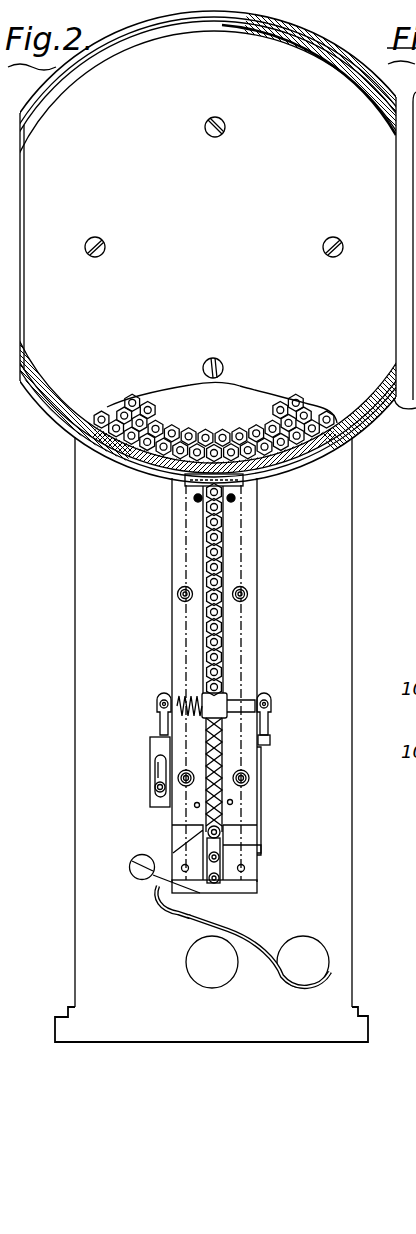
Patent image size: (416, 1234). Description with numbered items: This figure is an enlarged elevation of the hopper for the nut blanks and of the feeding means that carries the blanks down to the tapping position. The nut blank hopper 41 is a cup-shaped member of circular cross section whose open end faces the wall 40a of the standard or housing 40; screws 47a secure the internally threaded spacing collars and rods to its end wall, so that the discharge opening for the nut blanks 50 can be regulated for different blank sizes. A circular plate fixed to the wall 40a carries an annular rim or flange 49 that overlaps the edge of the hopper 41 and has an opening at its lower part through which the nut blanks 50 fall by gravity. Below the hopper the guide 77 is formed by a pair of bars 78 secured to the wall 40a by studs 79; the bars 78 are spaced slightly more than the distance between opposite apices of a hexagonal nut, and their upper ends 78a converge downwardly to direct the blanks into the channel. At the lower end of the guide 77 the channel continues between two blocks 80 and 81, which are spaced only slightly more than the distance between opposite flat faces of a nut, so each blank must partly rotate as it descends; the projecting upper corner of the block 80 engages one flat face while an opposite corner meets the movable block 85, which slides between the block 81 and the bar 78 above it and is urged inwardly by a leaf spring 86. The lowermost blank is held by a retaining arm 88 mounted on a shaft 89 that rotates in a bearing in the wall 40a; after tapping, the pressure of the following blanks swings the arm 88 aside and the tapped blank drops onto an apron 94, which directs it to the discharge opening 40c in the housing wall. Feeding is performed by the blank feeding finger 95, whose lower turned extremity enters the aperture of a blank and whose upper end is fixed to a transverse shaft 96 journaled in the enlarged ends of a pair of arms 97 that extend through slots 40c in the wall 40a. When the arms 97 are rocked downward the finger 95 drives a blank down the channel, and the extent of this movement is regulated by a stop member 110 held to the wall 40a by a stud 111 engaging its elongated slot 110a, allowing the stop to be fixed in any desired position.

The standard or housing 40 is at (378, 623).
The wall of the housing 40a is at (58, 1010).
The discharge opening and slots 40c is at (318, 965).
The nut blank hopper 41 is at (97, 321).
The screws 47a is at (222, 360).
The annular rim or flange 49 is at (412, 444).
The nut blanks 50 is at (245, 430).
The guide 77 is at (262, 564).
The bars 78 is at (178, 632).
The upper ends of the bars 78a is at (180, 483).
The studs 79 is at (248, 595).
The bar or block 80 is at (173, 852).
The bar or block 81 is at (247, 860).
The movable block 85 is at (243, 837).
The leaf spring 86 is at (260, 800).
The retaining arm 88 is at (173, 914).
The shaft 89 is at (130, 873).
The apron 94 is at (240, 932).
The blank feeding finger 95 is at (222, 763).
The transverse shaft 96 is at (242, 700).
The arms 97 is at (158, 723).
The stop member 110 is at (150, 747).
The elongated slot 110a is at (157, 767).
The stud 111 is at (160, 787).